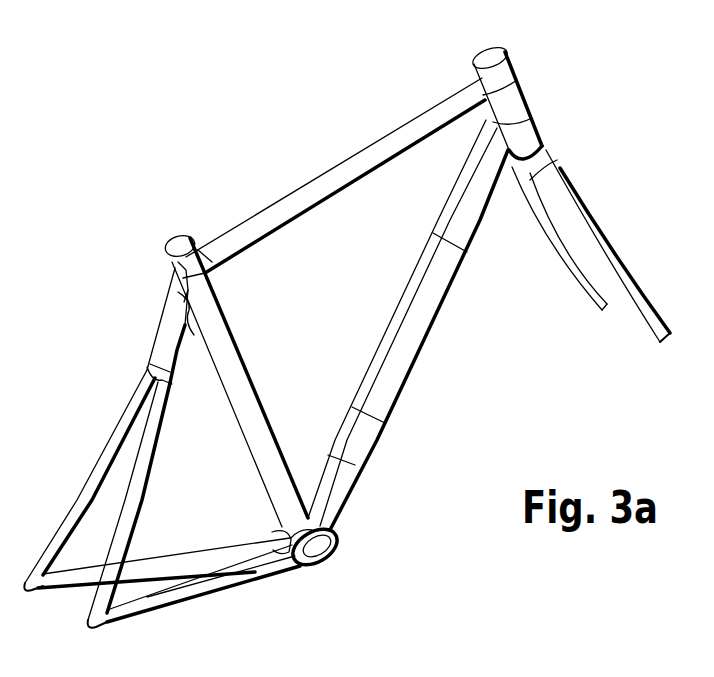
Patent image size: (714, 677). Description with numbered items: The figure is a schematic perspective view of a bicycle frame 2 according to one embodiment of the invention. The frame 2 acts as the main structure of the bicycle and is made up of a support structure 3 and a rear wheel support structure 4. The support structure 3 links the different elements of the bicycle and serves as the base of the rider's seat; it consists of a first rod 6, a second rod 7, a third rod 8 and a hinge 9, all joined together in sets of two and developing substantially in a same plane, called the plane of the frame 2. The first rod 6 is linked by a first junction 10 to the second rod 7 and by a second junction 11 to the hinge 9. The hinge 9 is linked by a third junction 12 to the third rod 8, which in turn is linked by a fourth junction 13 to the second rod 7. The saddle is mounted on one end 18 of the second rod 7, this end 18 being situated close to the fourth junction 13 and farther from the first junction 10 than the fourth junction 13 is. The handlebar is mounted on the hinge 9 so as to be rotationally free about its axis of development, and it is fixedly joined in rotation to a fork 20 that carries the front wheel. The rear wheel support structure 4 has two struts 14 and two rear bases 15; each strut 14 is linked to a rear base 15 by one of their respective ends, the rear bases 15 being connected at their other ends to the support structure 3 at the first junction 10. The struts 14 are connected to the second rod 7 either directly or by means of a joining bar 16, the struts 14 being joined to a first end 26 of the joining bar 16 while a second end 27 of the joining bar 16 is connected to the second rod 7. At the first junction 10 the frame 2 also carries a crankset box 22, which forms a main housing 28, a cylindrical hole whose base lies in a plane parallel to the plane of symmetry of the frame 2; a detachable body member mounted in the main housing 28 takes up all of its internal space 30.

The frame 2 is at (334, 176).
The support structure 3 is at (407, 130).
The rear wheel support structure 4 is at (160, 350).
The first rod 6 is at (418, 332).
The second rod 7 is at (230, 344).
The third rod 8 is at (353, 163).
The hinge 9 is at (507, 100).
The first junction 10 is at (310, 517).
The second junction 11 is at (532, 117).
The third junction 12 is at (520, 76).
The fourth junction 13 is at (205, 262).
The struts 14 is at (118, 432).
The rear bases 15 is at (147, 568).
The joining bar 16 is at (172, 312).
The end of the second rod 18 is at (180, 257).
The fork 20 is at (577, 227).
The crankset box 22 is at (288, 553).
The first end of the joining bar 26 is at (153, 378).
The second end of the joining bar 27 is at (197, 335).
The main housing 28 is at (339, 546).
The internal space 30 is at (318, 554).